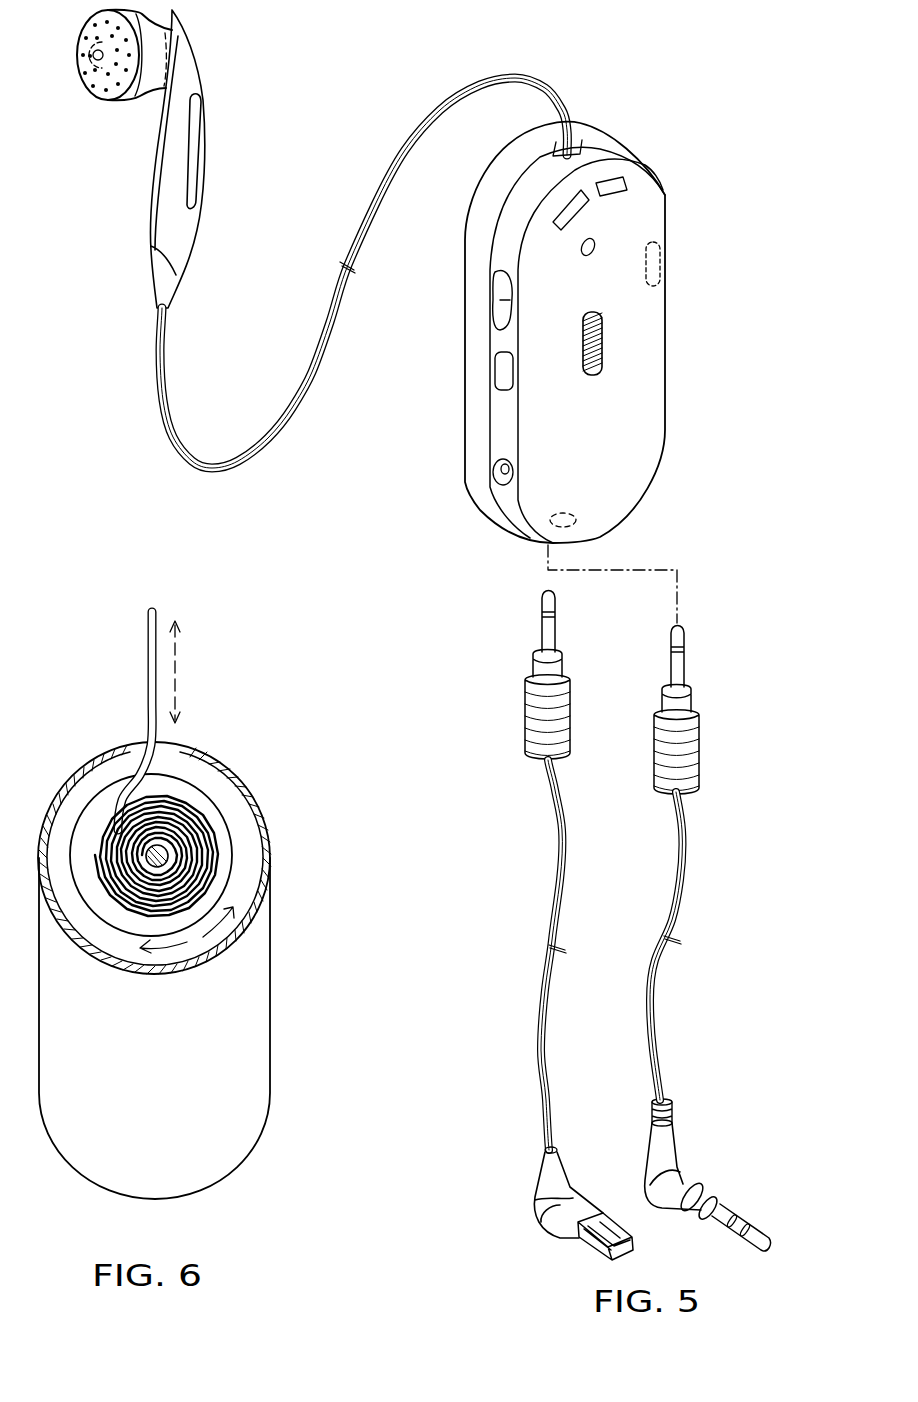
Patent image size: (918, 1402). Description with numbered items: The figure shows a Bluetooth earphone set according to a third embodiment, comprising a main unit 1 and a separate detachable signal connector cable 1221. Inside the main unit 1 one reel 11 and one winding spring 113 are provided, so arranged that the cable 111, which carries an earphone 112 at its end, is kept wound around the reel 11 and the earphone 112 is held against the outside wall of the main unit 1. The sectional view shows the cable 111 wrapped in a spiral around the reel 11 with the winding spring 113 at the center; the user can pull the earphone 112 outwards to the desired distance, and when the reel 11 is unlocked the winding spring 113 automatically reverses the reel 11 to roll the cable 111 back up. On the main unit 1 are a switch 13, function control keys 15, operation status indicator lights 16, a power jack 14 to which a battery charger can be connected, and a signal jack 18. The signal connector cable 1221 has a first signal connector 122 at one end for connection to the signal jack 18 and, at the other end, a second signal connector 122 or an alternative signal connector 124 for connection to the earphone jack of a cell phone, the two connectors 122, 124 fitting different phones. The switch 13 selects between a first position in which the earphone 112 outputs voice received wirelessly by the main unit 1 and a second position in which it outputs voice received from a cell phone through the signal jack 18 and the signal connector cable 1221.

In FIG. 5, the main unit 1 is at (672, 305).
In FIG. 6, the main unit 1 is at (277, 938).
In FIG. 6, the reel 11 is at (208, 804).
In FIG. 5, the switch 13 is at (600, 333).
In FIG. 5, the power jack 14 is at (495, 478).
In FIG. 5, the function control keys 15 is at (496, 372).
In FIG. 5, the operation status indicator lights 16 is at (573, 210).
In FIG. 5, the signal jack 18 is at (560, 512).
In FIG. 5, the cable 111 is at (420, 125).
In FIG. 6, the cable 111 is at (183, 800).
In FIG. 5, the earphone 112 is at (190, 72).
In FIG. 6, the winding spring 113 is at (173, 850).
In FIG. 5, the signal connector 122 is at (550, 733).
In FIG. 5, the signal connector 124 is at (535, 1201).
In FIG. 5, the signal connector cable 1221 is at (722, 967).